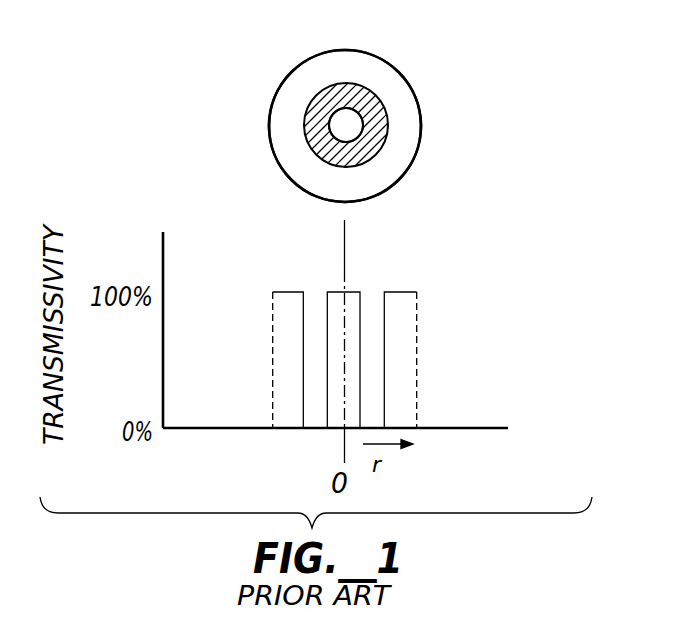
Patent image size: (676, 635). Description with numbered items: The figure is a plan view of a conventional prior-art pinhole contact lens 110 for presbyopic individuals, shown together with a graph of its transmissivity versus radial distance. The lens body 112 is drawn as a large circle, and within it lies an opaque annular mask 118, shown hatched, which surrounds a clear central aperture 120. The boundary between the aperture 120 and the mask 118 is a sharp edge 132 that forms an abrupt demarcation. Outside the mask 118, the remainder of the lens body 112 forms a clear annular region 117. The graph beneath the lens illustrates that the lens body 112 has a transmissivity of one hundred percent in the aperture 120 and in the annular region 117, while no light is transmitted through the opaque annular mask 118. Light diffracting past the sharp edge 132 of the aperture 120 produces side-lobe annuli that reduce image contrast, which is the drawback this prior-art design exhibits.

The pinhole contact lens 110 is at (361, 106).
The lens body 112 is at (318, 53).
The annular region 117 is at (397, 165).
The annular mask 118 is at (388, 115).
The clear central aperture 120 is at (348, 120).
The edge of the clear central aperture 132 is at (333, 128).